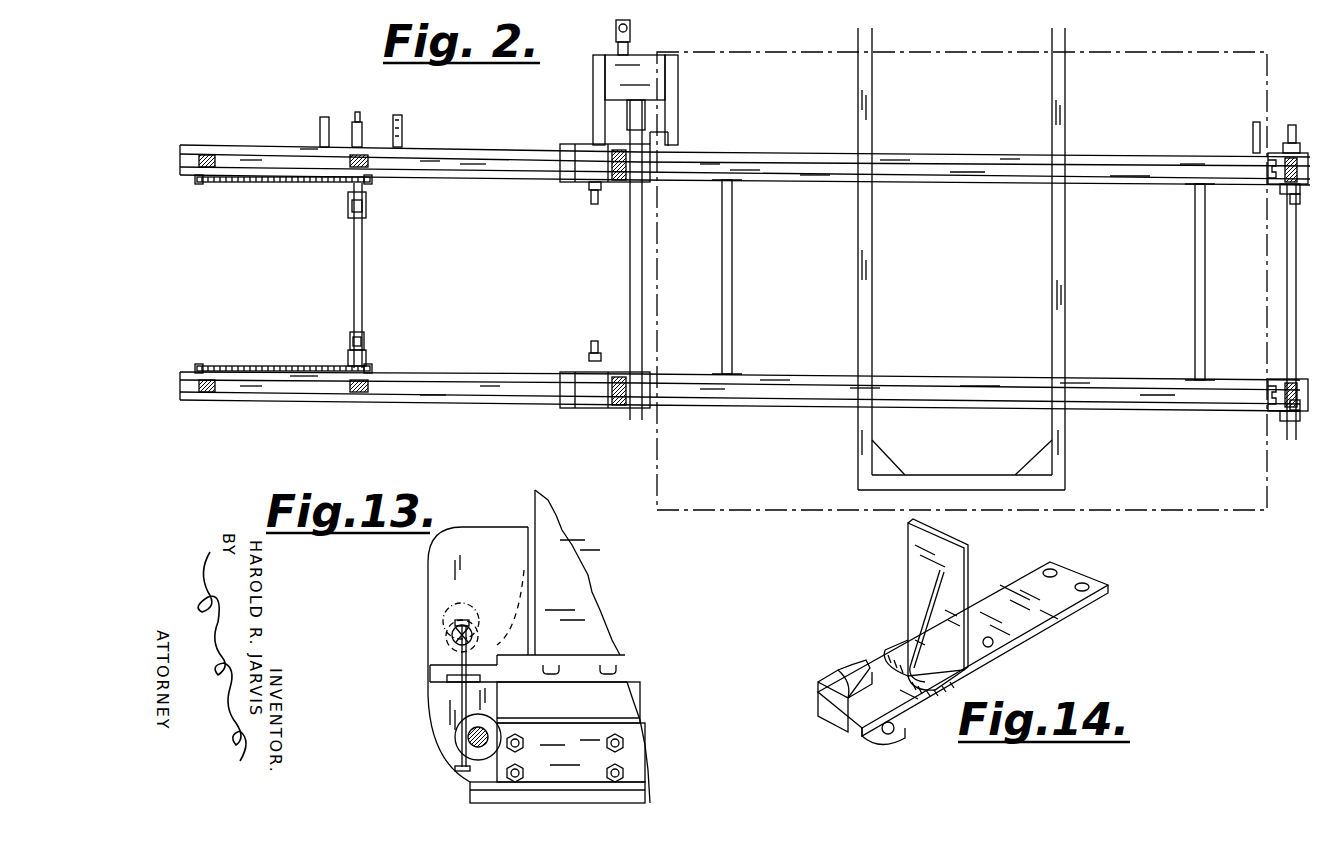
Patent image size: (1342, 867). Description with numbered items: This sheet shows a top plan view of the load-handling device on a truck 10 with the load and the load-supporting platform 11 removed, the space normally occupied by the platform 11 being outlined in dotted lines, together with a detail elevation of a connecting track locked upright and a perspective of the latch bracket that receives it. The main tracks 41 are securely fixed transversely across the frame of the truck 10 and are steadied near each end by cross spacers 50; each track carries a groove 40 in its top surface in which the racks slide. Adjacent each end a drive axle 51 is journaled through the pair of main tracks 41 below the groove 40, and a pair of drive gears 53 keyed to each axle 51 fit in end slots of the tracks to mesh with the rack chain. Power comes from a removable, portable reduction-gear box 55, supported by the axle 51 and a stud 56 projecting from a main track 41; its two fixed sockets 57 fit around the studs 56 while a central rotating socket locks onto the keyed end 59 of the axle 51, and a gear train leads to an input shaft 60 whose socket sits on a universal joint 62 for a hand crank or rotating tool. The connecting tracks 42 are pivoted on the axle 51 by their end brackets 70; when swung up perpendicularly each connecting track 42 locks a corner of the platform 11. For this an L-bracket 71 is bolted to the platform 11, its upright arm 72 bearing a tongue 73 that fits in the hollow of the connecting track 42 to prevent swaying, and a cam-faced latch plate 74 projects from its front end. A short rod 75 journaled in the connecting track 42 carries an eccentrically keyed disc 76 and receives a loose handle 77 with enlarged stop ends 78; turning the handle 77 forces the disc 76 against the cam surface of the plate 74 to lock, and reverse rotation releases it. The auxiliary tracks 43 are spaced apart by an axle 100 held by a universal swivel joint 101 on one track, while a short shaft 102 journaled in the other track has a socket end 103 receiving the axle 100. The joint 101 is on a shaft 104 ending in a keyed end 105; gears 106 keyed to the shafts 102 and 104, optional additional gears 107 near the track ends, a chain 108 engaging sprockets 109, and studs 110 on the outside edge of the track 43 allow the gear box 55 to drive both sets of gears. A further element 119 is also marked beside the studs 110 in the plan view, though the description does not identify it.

In FIG. 2, the truck 10 is at (1066, 436).
In FIG. 2, the load-supporting platform 11 is at (1168, 512).
In FIG. 13, the load-supporting platform 11 is at (594, 585).
In FIG. 2, the groove 40 is at (944, 166).
In FIG. 2, the main tracks 41 is at (1124, 164).
In FIG. 13, the main tracks 41 is at (622, 708).
In FIG. 2, the connecting tracks 42 is at (566, 146).
In FIG. 13, the connecting tracks 42 is at (437, 566).
In FIG. 2, the auxiliary tracks 43 is at (482, 152).
In FIG. 2, the cross spacers 50 is at (732, 250).
In FIG. 2, the drive axle 51 is at (630, 296).
In FIG. 13, the drive axle 51 is at (490, 735).
In FIG. 2, the drive gear 53 is at (646, 174).
In FIG. 2, the reduction-gear box 55 is at (620, 72).
In FIG. 2, the stud 56 is at (672, 148).
In FIG. 2, the fixed sockets 57 is at (596, 96).
In FIG. 2, the keyed end 59 is at (1292, 125).
In FIG. 2, the input shaft 60 is at (610, 52).
In FIG. 2, the universal joint 62 is at (632, 28).
In FIG. 13, the end brackets 70 is at (455, 731).
In FIG. 13, the L-bracket 71 is at (628, 676).
In FIG. 14, the L-bracket 71 is at (1028, 637).
In FIG. 13, the upright arm 72 is at (527, 558).
In FIG. 14, the upright arm 72 is at (910, 556).
In FIG. 13, the tongue 73 is at (514, 598).
In FIG. 14, the tongue 73 is at (928, 618).
In FIG. 13, the cam-faced latch plate 74 is at (445, 664).
In FIG. 14, the cam-faced latch plate 74 is at (818, 698).
In FIG. 2, the rod 75 is at (590, 196).
In FIG. 13, the rod 75 is at (452, 636).
In FIG. 2, the disc 76 is at (598, 204).
In FIG. 13, the disc 76 is at (447, 648).
In FIG. 13, the handle 77 is at (460, 706).
In FIG. 13, the stop ends 78 is at (458, 622).
In FIG. 2, the axle 100 is at (362, 266).
In FIG. 2, the universal swivel joint 101 is at (366, 208).
In FIG. 2, the short shaft 102 is at (366, 362).
In FIG. 2, the socket end 103 is at (364, 343).
In FIG. 2, the shaft 104 is at (400, 104).
In FIG. 2, the keyed end 105 is at (356, 120).
In FIG. 2, the gear 106 is at (370, 168).
In FIG. 2, the additional gears 107 is at (216, 156).
In FIG. 2, the chain 108 is at (278, 184).
In FIG. 2, the sprockets 109 is at (212, 186).
In FIG. 2, the studs 110 is at (318, 128).
In FIG. 2, the post notches 119 is at (402, 128).